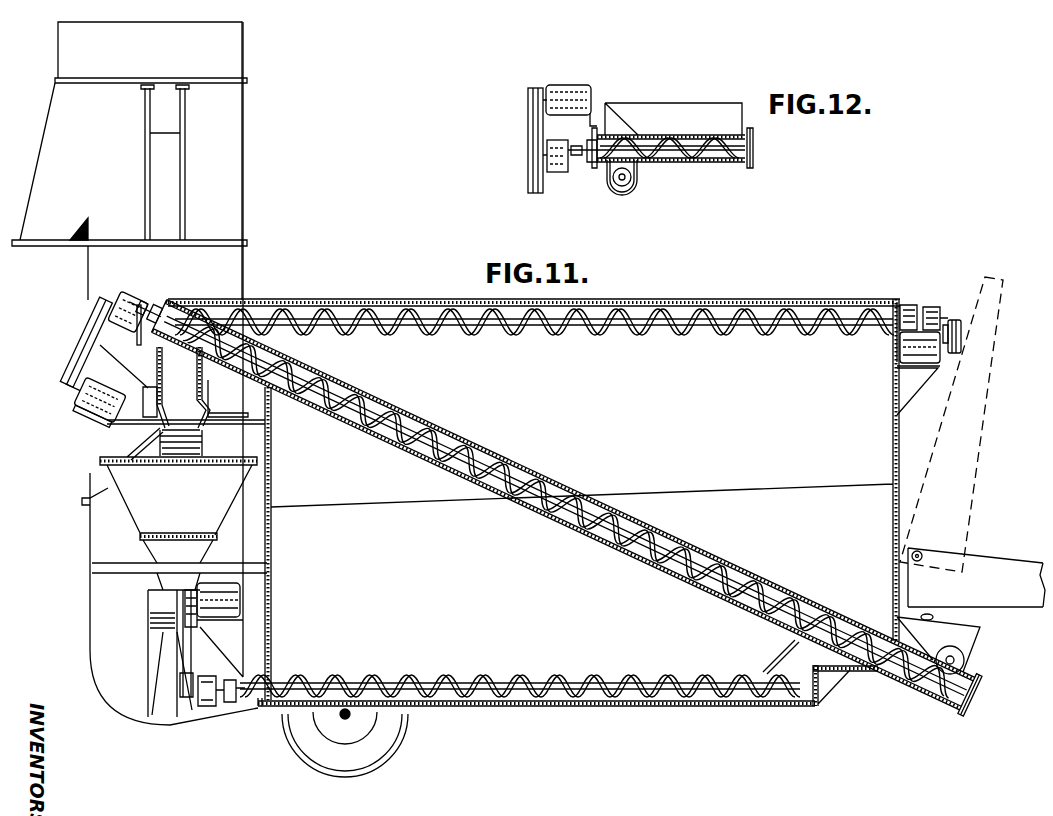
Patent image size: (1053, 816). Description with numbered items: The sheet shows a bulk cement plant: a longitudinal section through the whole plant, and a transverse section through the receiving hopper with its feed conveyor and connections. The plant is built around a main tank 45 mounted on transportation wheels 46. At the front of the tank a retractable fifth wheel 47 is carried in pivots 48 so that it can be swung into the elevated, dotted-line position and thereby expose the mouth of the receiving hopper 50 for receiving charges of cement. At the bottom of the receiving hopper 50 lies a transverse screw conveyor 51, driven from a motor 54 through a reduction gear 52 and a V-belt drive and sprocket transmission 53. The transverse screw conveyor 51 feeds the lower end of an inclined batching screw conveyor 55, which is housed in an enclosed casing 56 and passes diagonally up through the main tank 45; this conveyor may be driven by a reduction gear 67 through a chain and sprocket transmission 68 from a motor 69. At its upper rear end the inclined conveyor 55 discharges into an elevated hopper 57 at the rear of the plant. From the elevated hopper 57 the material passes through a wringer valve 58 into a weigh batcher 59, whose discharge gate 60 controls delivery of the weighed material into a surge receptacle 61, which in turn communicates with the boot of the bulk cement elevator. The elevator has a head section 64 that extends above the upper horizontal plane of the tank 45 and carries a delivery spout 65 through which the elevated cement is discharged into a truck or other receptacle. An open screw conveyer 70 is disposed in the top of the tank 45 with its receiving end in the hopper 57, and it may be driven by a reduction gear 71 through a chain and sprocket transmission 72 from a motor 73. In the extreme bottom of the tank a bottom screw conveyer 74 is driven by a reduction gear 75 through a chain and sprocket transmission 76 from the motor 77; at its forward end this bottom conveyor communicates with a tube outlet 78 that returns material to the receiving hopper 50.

In FIG. 11, the main tank 45 is at (670, 423).
In FIG. 11, the transportation wheels 46 is at (388, 736).
In FIG. 11, the retractable fifth wheel 47 is at (1013, 538).
In FIG. 11, the pivots 48 is at (946, 537).
In FIG. 11, the receiving hopper 50 is at (962, 633).
In FIG. 12, the receiving hopper 50 is at (681, 92).
In FIG. 11, the transverse screw conveyor 51 is at (965, 660).
In FIG. 12, the transverse screw conveyor 51 is at (710, 162).
In FIG. 12, the reduction gear 52 is at (557, 172).
In FIG. 12, the V-belt drive and sprocket transmission 53 is at (534, 134).
In FIG. 12, the motor 54 is at (582, 86).
In FIG. 11, the inclined batching screw conveyor 55 is at (597, 543).
In FIG. 12, the inclined batching screw conveyor 55 is at (618, 192).
In FIG. 11, the enclosed casing 56 is at (521, 445).
In FIG. 12, the enclosed casing 56 is at (638, 183).
In FIG. 11, the elevated hopper 57 is at (192, 384).
In FIG. 11, the wringer valve 58 is at (192, 415).
In FIG. 11, the weigh batcher 59 is at (191, 509).
In FIG. 11, the discharge gate 60 is at (162, 598).
In FIG. 11, the surge receptacle 61 is at (165, 665).
In FIG. 11, the head section 64 is at (235, 173).
In FIG. 11, the delivery spout 65 is at (48, 231).
In FIG. 11, the reduction gear 67 is at (157, 281).
In FIG. 11, the chain and sprocket transmission 68 is at (86, 333).
In FIG. 11, the motor 69 is at (100, 428).
In FIG. 11, the open screw conveyer 70 is at (508, 332).
In FIG. 11, the reduction gear 71 is at (933, 316).
In FIG. 11, the chain and sprocket transmission 72 is at (953, 326).
In FIG. 11, the motor 73 is at (903, 348).
In FIG. 11, the bottom screw conveyer 74 is at (590, 680).
In FIG. 11, the reduction gear 75 is at (208, 710).
In FIG. 11, the chain and sprocket transmission 76 is at (197, 656).
In FIG. 11, the motor 77 is at (236, 600).
In FIG. 11, the tube outlet 78 is at (800, 657).